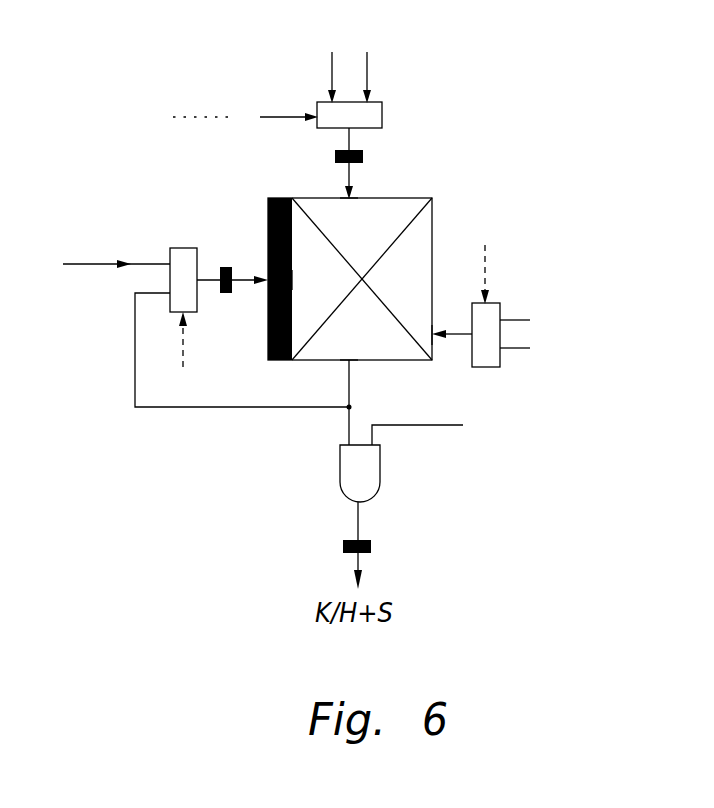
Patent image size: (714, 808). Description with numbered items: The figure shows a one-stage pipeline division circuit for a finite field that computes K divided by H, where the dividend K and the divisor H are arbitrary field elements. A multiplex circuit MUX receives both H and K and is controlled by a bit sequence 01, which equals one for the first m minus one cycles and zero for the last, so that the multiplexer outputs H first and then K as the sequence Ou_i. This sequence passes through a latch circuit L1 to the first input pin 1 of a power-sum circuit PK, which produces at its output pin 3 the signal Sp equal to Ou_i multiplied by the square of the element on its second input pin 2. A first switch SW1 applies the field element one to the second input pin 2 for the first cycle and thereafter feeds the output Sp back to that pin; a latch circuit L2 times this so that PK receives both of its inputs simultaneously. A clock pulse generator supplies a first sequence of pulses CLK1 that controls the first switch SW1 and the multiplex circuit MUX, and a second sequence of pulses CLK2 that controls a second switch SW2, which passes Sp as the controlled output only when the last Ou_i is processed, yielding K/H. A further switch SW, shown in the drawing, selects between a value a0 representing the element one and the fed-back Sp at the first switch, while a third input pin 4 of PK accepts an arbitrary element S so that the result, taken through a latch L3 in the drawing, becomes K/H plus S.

The dividend element K is at (333, 63).
The divisor element H is at (368, 63).
The control bit sequence 01 is at (230, 116).
The multiplex circuit MUX is at (349, 150).
The latch circuit L1 is at (366, 158).
The power-sum circuit PK is at (411, 198).
The first input pin 1 is at (349, 212).
The second input pin 2 is at (299, 279).
The output pin 3 is at (349, 346).
The third input pin 4 is at (424, 332).
The input value a0 is at (105, 263).
The first switch SW1 is at (243, 324).
The latch circuit L2 is at (226, 260).
The second sequence of pulses CLK2 is at (184, 356).
The switch SW is at (492, 330).
The first sequence of pulses CLK1 is at (447, 316).
The second switch SW2 is at (334, 474).
The delay element L3 is at (375, 551).